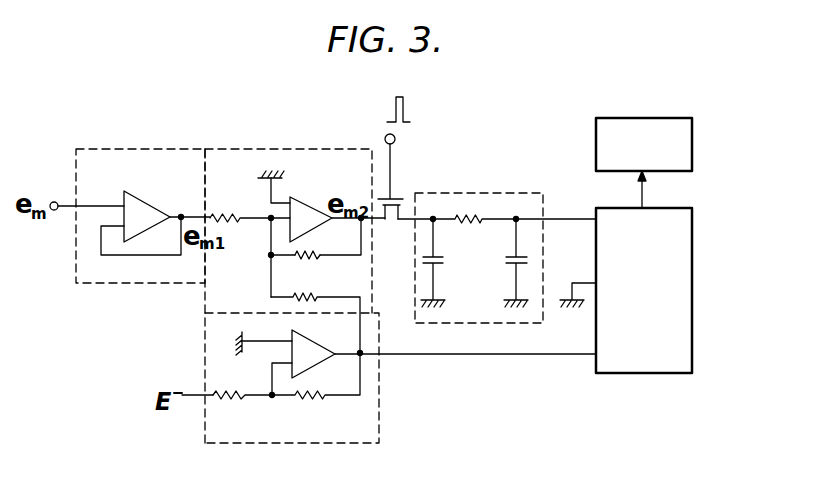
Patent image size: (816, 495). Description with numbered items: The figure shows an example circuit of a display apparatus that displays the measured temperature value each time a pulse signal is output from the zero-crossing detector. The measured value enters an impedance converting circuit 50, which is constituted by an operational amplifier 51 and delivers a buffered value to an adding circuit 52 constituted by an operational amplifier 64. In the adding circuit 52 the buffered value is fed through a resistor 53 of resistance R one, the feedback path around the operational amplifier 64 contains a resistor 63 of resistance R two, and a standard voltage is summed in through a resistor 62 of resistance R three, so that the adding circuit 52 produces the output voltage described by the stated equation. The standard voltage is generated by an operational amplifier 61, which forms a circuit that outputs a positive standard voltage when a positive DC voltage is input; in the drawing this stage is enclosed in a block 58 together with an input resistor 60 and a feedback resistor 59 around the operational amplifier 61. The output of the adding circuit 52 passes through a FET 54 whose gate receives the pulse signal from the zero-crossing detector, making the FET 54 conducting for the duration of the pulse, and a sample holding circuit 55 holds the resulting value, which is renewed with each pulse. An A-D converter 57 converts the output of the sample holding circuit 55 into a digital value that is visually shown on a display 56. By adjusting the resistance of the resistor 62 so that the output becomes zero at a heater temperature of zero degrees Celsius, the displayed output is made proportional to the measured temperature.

The impedance converting circuit 50 is at (113, 158).
The operational amplifier 51 is at (142, 204).
The adding circuit 52 is at (227, 158).
The resistor 53 is at (240, 196).
The FET 54 is at (400, 197).
The sample holding circuit 55 is at (453, 197).
The display 56 is at (597, 160).
The A-D converter 57 is at (597, 372).
The reference inverting amplifier stage 58 is at (370, 407).
The feedback resistor 59 is at (304, 400).
The input resistor 60 is at (217, 402).
The operational amplifier 61 is at (313, 352).
The resistor 62 is at (293, 295).
The resistor 63 is at (312, 257).
The operational amplifier 64 is at (309, 200).